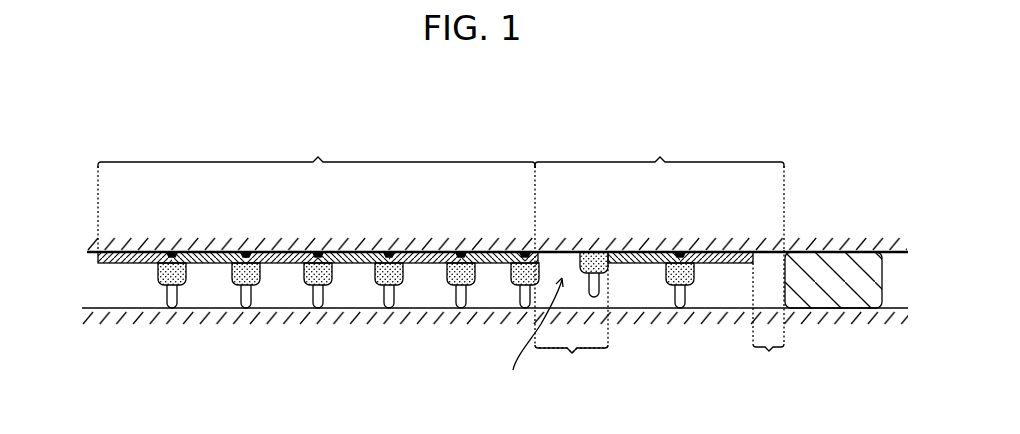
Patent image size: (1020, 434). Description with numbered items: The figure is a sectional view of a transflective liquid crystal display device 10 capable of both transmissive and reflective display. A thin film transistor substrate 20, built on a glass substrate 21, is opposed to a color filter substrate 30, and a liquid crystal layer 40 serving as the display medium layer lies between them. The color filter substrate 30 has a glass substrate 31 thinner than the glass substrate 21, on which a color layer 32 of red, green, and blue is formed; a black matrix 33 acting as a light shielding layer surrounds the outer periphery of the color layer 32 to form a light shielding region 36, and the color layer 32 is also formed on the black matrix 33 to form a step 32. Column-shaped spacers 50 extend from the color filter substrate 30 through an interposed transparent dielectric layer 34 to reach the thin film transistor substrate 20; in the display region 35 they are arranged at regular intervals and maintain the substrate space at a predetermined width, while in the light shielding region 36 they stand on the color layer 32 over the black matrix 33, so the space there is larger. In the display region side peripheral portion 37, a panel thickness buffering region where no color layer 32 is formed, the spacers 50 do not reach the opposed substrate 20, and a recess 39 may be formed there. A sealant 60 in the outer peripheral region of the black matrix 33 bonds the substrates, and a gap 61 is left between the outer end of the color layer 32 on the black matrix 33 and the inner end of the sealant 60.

The liquid crystal display device 10 is at (498, 131).
The thin film transistor substrate 20 is at (279, 311).
The glass substrate 21 is at (705, 312).
The color filter substrate 30 is at (286, 252).
The glass substrate 31 is at (720, 251).
The color layer 32 is at (98, 253).
The black matrix 33 is at (560, 251).
The transparent dielectric layer 34 is at (403, 275).
The display region 35 is at (316, 189).
The light shielding region 36 is at (659, 187).
The display region side peripheral portion 37 is at (571, 277).
The recess 39 is at (531, 341).
The liquid crystal layer 40 is at (107, 290).
The column-shaped spacers 50 is at (467, 297).
The sealant 60 is at (843, 300).
The gap 61 is at (769, 319).